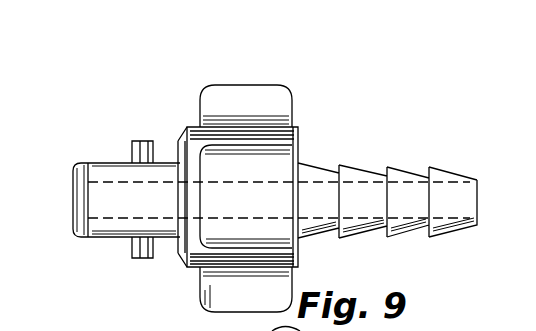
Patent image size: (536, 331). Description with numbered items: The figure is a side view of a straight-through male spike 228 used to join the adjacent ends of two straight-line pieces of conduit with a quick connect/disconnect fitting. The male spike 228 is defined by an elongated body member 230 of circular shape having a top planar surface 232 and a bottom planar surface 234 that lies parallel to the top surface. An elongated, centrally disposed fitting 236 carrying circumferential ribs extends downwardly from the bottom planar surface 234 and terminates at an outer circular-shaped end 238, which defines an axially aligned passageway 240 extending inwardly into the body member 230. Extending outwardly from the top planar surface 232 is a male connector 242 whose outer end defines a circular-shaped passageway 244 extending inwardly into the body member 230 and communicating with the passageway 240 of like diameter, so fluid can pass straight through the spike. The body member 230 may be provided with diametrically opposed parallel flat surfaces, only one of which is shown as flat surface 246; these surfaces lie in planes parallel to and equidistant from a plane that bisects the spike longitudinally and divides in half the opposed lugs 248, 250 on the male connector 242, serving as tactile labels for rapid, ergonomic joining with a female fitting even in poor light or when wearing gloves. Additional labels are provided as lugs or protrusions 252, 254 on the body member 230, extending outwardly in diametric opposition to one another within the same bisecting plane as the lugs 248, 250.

The straight-through male spike 228 is at (197, 89).
The elongated body member 230 is at (299, 111).
The top planar surface 232 is at (190, 126).
The bottom planar surface 234 is at (298, 266).
The elongated centrally disposed fitting 236 is at (357, 159).
The outer circular-shape end 238 is at (478, 180).
The axial alined passageway 240 is at (365, 233).
The male connector 242 is at (113, 243).
The circular-shaped passageway 244 is at (80, 200).
The flat surface 246 is at (284, 162).
The lug 248 is at (128, 153).
The lug 250 is at (147, 260).
The lug or protrusion 252 is at (220, 93).
The lug or protrusion 254 is at (230, 300).